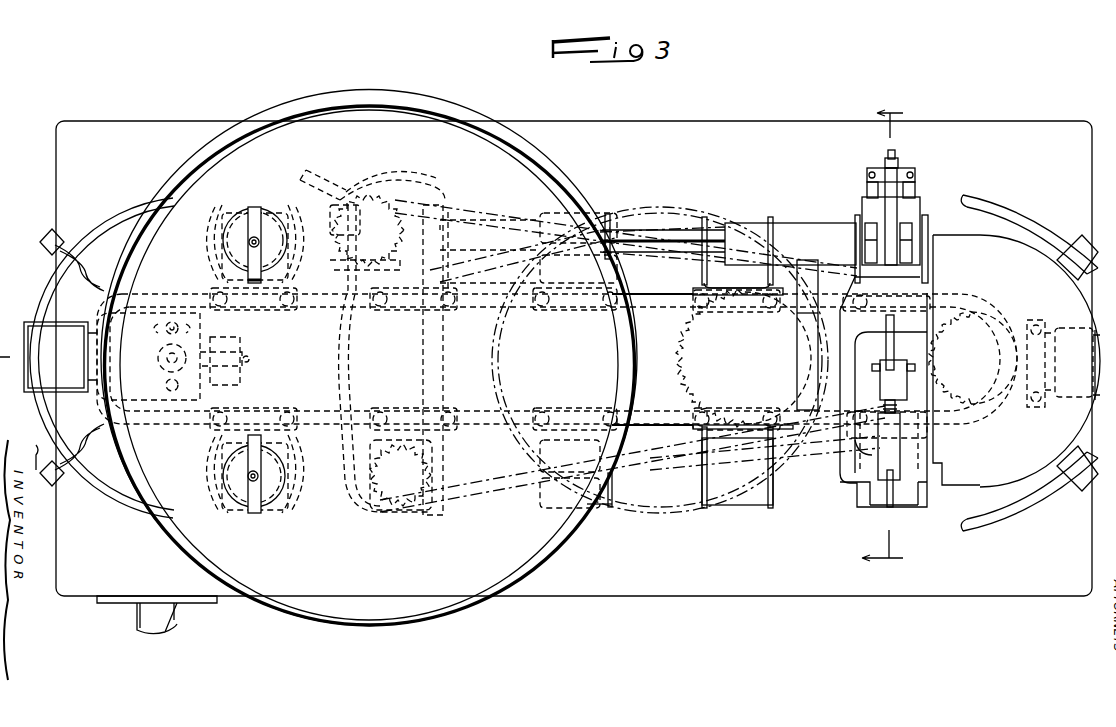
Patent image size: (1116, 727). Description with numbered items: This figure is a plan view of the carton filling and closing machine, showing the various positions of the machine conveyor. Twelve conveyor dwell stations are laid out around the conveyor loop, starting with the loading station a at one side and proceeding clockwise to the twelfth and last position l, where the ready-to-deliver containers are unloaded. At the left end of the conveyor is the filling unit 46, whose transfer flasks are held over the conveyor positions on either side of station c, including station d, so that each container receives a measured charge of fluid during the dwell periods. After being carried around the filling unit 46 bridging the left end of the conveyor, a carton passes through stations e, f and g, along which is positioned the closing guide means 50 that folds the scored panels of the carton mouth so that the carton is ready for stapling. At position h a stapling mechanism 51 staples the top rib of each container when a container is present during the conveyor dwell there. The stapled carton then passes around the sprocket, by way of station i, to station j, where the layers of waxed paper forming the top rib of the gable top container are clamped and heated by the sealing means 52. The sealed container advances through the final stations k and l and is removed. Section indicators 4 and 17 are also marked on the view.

The filling unit 46 is at (150, 186).
The closing guide means 50 is at (663, 221).
The stapling mechanism 51 is at (858, 186).
The sealing means 52 is at (918, 494).
The section line 17 is at (870, 336).
The section line 4 is at (290, 358).
The loading station a is at (445, 498).
The conveyor station c is at (56, 365).
The conveyor station d is at (232, 218).
The conveyor station e is at (403, 208).
The conveyor station f is at (560, 222).
The conveyor station g is at (729, 222).
The stapling station h is at (918, 222).
The conveyor station i is at (1080, 362).
The sealing station j is at (906, 508).
The conveyor station k is at (749, 504).
The unloading station l is at (605, 507).